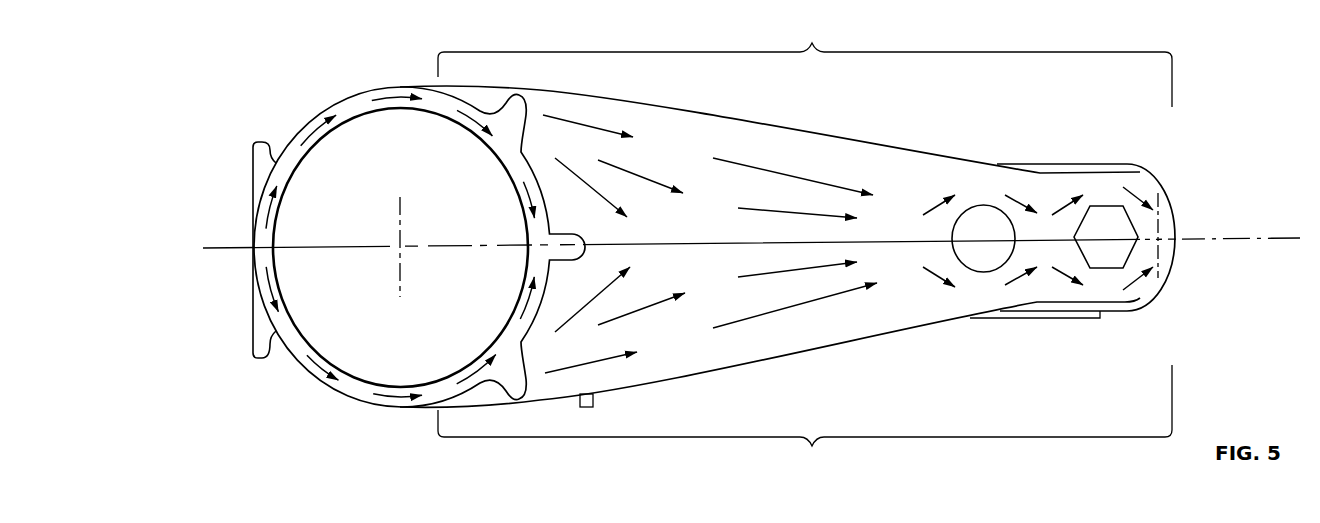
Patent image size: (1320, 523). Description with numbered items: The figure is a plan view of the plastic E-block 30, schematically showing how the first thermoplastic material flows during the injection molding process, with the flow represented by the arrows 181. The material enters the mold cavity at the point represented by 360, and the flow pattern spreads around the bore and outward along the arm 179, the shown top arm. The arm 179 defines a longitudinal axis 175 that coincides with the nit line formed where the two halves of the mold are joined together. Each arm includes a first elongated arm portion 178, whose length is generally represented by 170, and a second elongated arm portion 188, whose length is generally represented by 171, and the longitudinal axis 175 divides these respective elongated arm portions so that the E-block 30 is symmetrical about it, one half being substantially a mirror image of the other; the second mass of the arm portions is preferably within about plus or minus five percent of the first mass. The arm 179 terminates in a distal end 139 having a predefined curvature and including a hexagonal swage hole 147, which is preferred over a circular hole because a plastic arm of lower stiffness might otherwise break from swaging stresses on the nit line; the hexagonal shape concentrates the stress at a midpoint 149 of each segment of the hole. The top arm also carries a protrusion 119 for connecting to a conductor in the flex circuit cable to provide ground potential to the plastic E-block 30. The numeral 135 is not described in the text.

The plastic E-block 30 is at (292, 378).
The thermoplastic material entry point 360 is at (253, 250).
The pivot axis 135 is at (400, 248).
The longitudinal axis 175 is at (1297, 240).
The length of first elongated arm portion 170 is at (805, 58).
The length of second elongated arm portion 171 is at (805, 418).
The first elongated arm portion 178 is at (912, 152).
The arm 179 is at (920, 328).
The thermoplastic material flow 181 is at (662, 185).
The second elongated arm portion 188 is at (740, 348).
The protrusion 119 is at (593, 403).
The hexagonal swage hole 147 is at (1108, 205).
The midpoint of hexagonal swage hole segment 149 is at (1128, 223).
The distal end 139 is at (1173, 250).